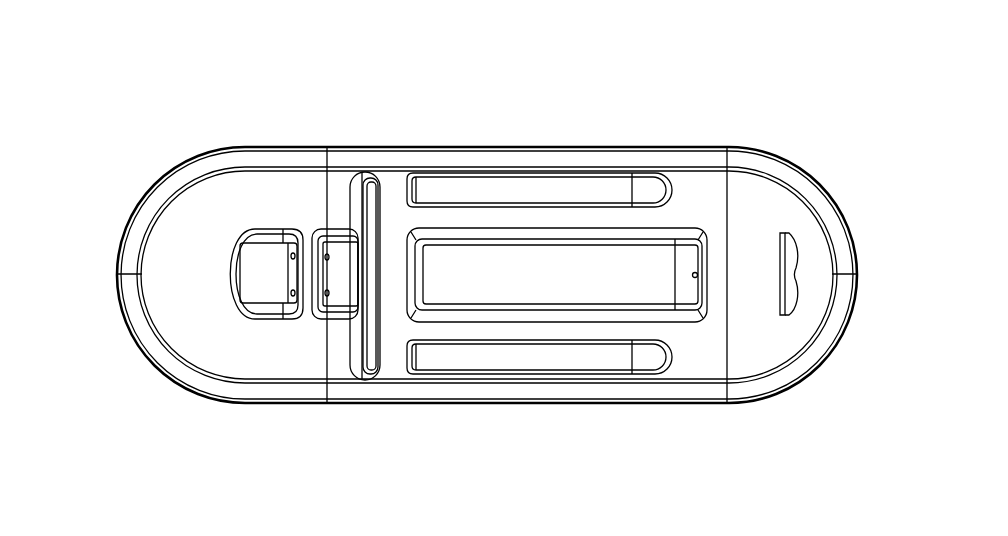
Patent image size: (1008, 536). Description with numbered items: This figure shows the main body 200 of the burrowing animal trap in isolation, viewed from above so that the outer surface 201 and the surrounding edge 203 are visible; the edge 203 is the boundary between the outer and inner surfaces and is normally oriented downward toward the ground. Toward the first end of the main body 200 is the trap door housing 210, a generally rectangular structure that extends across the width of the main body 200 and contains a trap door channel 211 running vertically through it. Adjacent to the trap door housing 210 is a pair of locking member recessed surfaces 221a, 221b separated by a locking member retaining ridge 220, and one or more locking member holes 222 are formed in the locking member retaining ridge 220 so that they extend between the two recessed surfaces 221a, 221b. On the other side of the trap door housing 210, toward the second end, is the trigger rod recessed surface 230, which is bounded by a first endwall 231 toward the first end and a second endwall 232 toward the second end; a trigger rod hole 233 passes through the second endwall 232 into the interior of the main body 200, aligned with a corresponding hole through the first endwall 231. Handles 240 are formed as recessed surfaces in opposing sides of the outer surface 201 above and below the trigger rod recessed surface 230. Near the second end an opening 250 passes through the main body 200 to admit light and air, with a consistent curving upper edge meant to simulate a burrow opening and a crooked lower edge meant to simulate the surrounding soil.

The main body 200 is at (166, 76).
The outer surface 201 is at (178, 313).
The edge 203 is at (125, 230).
The trap door housing 210 is at (371, 244).
The trap door channel 211 is at (370, 177).
The locking member retaining ridge 220 is at (261, 240).
The locking member recessed surface 221a is at (247, 288).
The locking member recessed surface 221b is at (338, 295).
The locking member holes 222 is at (293, 292).
The trigger rod recessed surface 230 is at (598, 215).
The first endwall 231 is at (420, 227).
The second endwall 232 is at (693, 253).
The trigger rod hole 233 is at (698, 276).
The handles 240 is at (546, 193).
The opening 250 is at (797, 283).